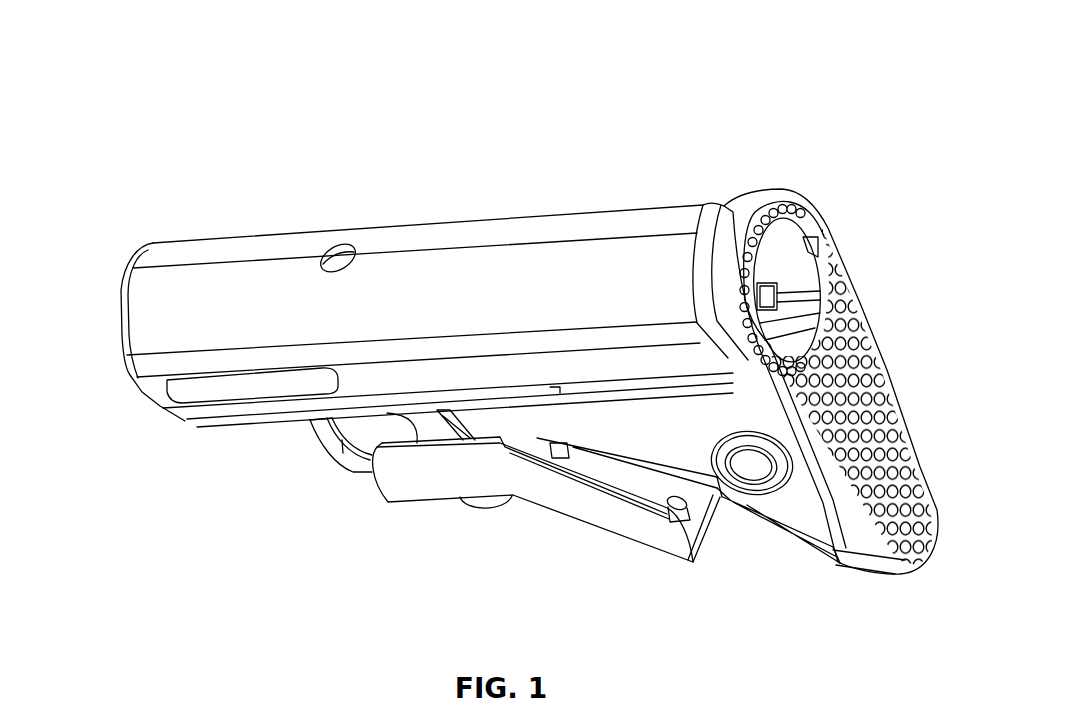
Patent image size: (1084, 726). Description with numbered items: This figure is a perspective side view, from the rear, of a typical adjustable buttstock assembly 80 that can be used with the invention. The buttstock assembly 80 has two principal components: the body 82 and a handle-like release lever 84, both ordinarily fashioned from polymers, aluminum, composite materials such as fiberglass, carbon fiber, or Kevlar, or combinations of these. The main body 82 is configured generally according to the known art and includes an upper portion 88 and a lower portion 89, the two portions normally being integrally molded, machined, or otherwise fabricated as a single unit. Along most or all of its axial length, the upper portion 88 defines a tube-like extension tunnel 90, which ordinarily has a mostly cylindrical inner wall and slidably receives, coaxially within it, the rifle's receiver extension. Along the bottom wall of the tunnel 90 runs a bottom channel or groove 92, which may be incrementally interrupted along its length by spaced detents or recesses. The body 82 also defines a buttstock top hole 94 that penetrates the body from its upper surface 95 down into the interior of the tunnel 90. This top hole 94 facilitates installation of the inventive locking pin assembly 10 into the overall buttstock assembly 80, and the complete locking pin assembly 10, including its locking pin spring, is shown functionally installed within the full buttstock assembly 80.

The adjustable buttstock assembly 80 is at (860, 76).
The body 82 is at (138, 308).
The release lever 84 is at (622, 520).
The upper portion 88 is at (700, 230).
The lower portion 89 is at (843, 523).
The extension tunnel 90 is at (790, 257).
The bottom channel or groove 92 is at (810, 343).
The buttstock top hole 94 is at (333, 250).
The upper surface 95 is at (460, 247).
The locking pin assembly 10 is at (456, 522).